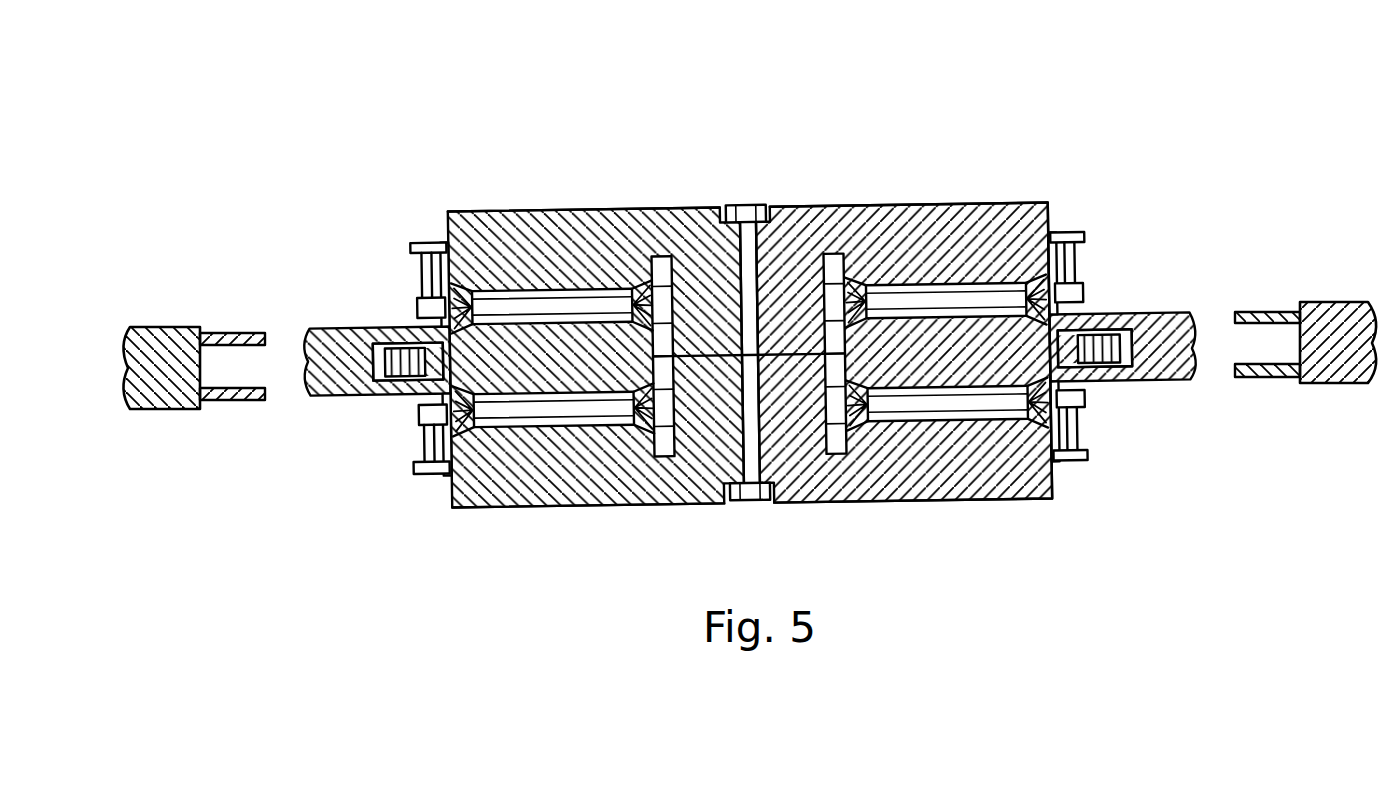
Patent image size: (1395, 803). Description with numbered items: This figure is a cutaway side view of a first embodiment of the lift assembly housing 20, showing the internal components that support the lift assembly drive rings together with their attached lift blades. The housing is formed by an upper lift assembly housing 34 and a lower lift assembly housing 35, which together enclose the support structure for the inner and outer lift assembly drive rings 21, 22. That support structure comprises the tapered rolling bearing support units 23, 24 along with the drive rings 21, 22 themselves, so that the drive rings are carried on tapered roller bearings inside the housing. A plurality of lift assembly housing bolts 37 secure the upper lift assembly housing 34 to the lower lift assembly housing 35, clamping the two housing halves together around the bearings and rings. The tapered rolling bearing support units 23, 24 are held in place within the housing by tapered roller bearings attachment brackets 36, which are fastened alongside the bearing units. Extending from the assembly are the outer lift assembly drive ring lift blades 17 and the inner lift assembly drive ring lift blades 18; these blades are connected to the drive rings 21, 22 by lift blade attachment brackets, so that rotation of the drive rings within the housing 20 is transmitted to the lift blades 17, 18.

The lift assembly housing 20 is at (892, 96).
The outer lift assembly drive ring lift blades 17 is at (155, 335).
The inner lift assembly drive ring lift blades 18 is at (1357, 303).
The inner lift assembly drive ring 21 is at (563, 360).
The outer lift assembly drive ring 22 is at (937, 340).
The tapered rolling bearing support unit 23 is at (869, 422).
The tapered rolling bearing support unit 24 is at (647, 424).
The upper lift assembly housing 34 is at (617, 245).
The lower lift assembly housing 35 is at (995, 484).
The tapered roller bearings attachment brackets 36 is at (440, 276).
The lift assembly housing bolts 37 is at (740, 205).